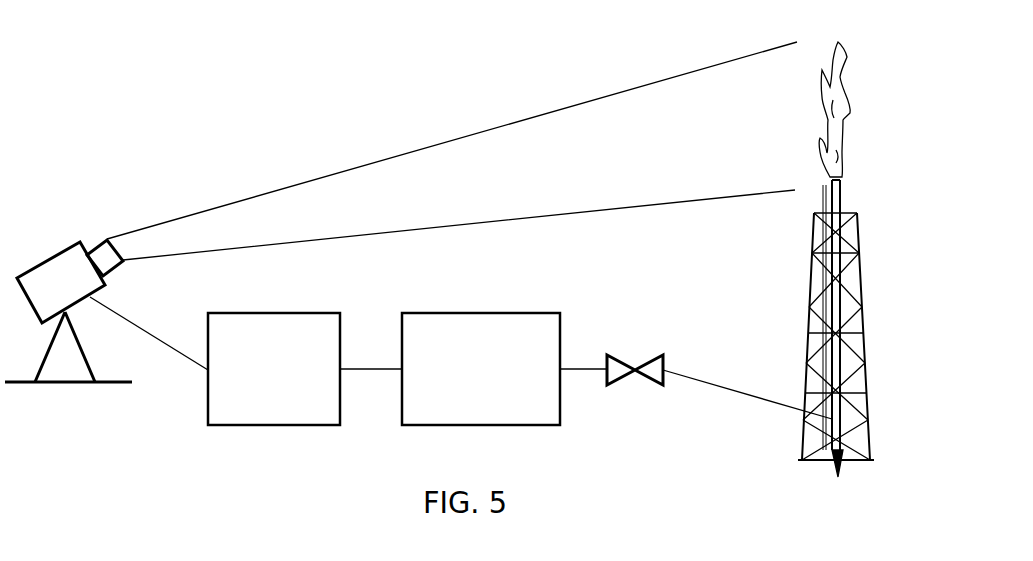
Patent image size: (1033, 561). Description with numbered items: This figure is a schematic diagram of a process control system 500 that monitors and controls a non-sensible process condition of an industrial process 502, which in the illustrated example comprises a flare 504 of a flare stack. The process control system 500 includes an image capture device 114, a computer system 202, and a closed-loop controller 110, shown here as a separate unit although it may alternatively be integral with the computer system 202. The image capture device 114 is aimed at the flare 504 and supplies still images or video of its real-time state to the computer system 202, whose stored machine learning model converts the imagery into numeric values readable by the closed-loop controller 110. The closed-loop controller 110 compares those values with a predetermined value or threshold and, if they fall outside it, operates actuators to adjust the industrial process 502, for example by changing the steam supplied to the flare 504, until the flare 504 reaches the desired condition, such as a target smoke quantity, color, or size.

The process control system 500 is at (140, 110).
The image capture device 114 is at (42, 262).
The computer system 202 is at (257, 408).
The closed-loop controller 110 is at (464, 408).
The industrial process 502 is at (868, 281).
The flare 504 is at (856, 104).